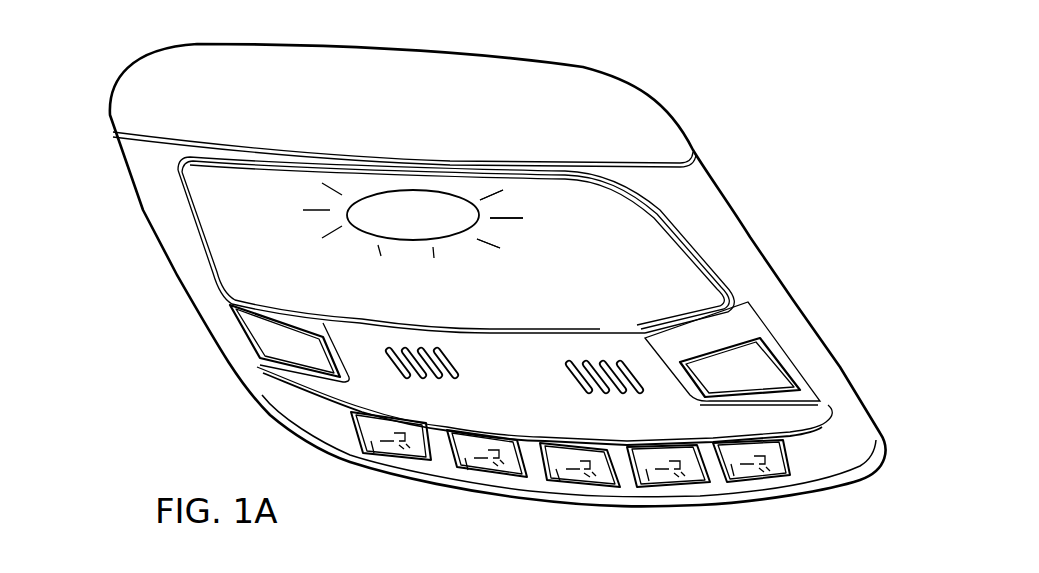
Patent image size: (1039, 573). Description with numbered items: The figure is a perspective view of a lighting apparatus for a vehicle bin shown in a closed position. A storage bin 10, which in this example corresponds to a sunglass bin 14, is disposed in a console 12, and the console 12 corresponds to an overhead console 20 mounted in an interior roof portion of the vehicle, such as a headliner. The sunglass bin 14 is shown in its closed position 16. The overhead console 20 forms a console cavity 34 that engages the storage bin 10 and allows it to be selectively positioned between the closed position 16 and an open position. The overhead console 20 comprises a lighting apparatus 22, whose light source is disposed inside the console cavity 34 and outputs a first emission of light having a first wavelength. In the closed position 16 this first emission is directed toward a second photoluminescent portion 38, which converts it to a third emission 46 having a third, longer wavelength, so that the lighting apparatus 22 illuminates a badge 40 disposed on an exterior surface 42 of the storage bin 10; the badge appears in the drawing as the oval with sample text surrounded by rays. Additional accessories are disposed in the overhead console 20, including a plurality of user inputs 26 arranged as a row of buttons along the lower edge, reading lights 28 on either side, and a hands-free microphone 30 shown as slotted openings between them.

The storage bin 10 is at (126, 184).
The sunglass bin 14 is at (209, 186).
The closed position 16 is at (498, 253).
The overhead console 20 is at (638, 40).
The console 12 is at (690, 200).
The lighting apparatus 22 is at (407, 183).
The plurality of user inputs 26 is at (730, 467).
The reading lights 28 is at (270, 338).
The hands-free microphone 30 is at (563, 369).
The console cavity 34 is at (716, 248).
The second photoluminescent portion 38 is at (554, 233).
The badge 40 is at (358, 207).
The exterior surface 42 is at (230, 247).
The third emission 46 is at (508, 233).